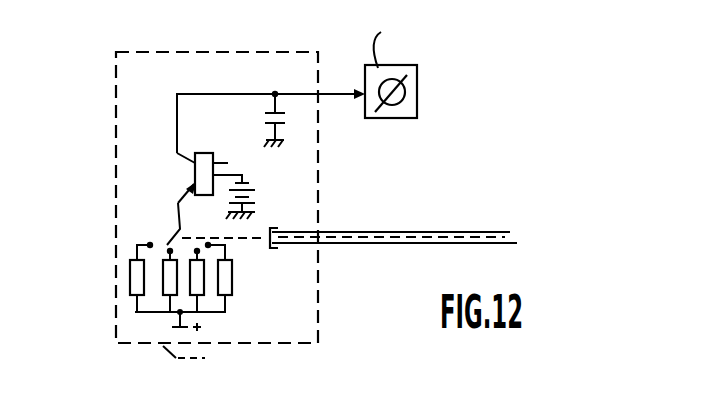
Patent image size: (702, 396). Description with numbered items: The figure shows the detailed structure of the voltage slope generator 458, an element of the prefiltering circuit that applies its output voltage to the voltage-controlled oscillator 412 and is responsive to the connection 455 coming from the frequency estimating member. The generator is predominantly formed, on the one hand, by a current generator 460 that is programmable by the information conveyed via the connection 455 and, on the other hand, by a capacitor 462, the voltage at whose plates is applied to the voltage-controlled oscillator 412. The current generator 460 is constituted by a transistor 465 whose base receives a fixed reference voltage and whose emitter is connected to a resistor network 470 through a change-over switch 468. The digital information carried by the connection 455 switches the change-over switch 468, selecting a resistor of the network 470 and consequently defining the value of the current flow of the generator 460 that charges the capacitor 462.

The voltage slope generator 458 is at (130, 92).
The current generator 460 is at (174, 178).
The capacitor 462 is at (268, 107).
The transistor 465 is at (236, 149).
The change-over switch 468 is at (163, 236).
The resistor network 470 is at (238, 287).
The voltage-controlled oscillator 412 is at (418, 99).
The connection 455 is at (464, 232).